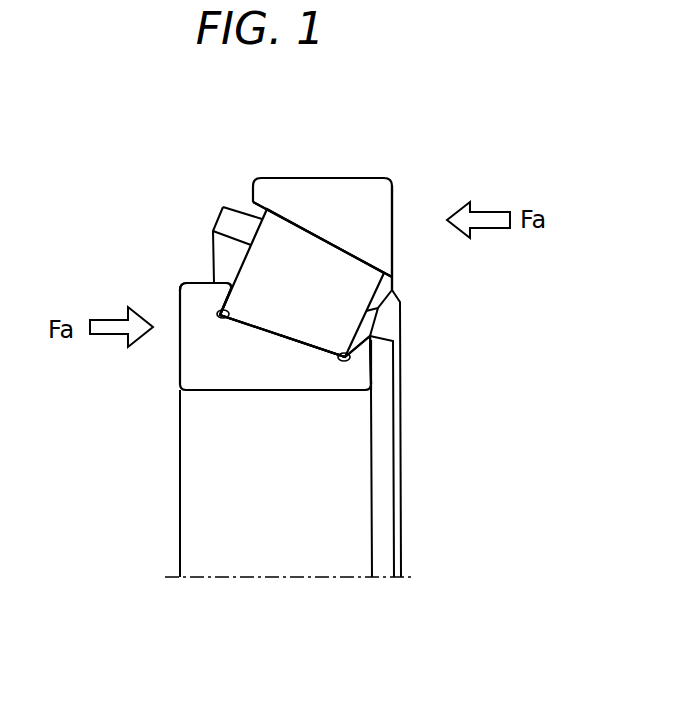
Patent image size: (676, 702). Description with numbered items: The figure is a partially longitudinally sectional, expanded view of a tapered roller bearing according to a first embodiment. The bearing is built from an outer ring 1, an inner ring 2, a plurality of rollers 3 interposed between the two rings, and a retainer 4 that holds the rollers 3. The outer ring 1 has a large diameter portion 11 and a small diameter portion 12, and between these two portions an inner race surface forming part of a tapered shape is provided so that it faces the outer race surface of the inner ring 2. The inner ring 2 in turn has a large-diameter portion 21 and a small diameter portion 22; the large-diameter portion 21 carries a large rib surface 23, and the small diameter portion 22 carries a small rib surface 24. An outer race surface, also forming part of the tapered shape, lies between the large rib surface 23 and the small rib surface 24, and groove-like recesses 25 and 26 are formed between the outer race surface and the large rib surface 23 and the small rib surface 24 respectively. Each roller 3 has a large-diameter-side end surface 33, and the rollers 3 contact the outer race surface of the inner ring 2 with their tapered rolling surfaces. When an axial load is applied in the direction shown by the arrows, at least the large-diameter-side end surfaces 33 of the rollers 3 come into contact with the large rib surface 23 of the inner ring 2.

The outer ring 1 is at (310, 192).
The large diameter portion 11 is at (264, 197).
The small diameter portion 12 is at (385, 256).
The inner ring 2 is at (288, 380).
The large-diameter portion 21 is at (193, 310).
The small diameter portion 22 is at (367, 363).
The large rib surface 23 is at (222, 305).
The small rib surface 24 is at (343, 355).
The groove-like recess 25 is at (220, 327).
The groove-like recess 26 is at (352, 370).
The roller 3 is at (330, 262).
The large-diameter-side end surface 33 is at (215, 248).
The retainer 4 is at (393, 310).